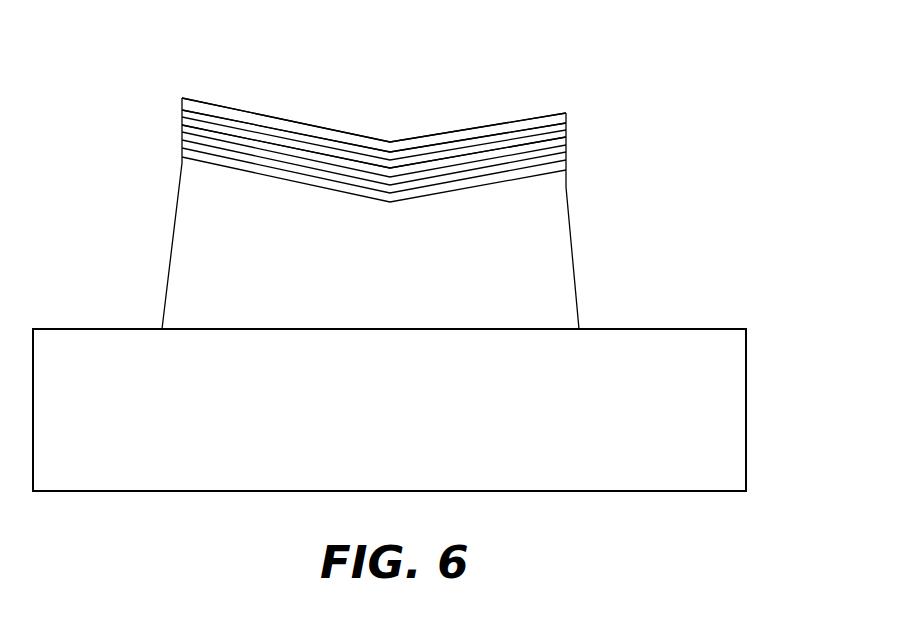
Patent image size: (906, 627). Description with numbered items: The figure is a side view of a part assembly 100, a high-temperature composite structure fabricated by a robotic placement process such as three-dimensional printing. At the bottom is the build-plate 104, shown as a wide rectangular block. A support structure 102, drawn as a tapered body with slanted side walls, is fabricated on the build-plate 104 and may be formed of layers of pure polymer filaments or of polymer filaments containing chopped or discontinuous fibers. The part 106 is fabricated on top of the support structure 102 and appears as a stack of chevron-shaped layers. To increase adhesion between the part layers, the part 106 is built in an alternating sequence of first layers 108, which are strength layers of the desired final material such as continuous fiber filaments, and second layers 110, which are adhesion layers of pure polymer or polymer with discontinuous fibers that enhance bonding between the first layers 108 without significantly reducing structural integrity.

The part assembly 100 is at (707, 132).
The support structure 102 is at (538, 260).
The build-plate 104 is at (668, 347).
The part 106 is at (569, 114).
The first layers 108 is at (567, 129).
The second layers 110 is at (182, 125).